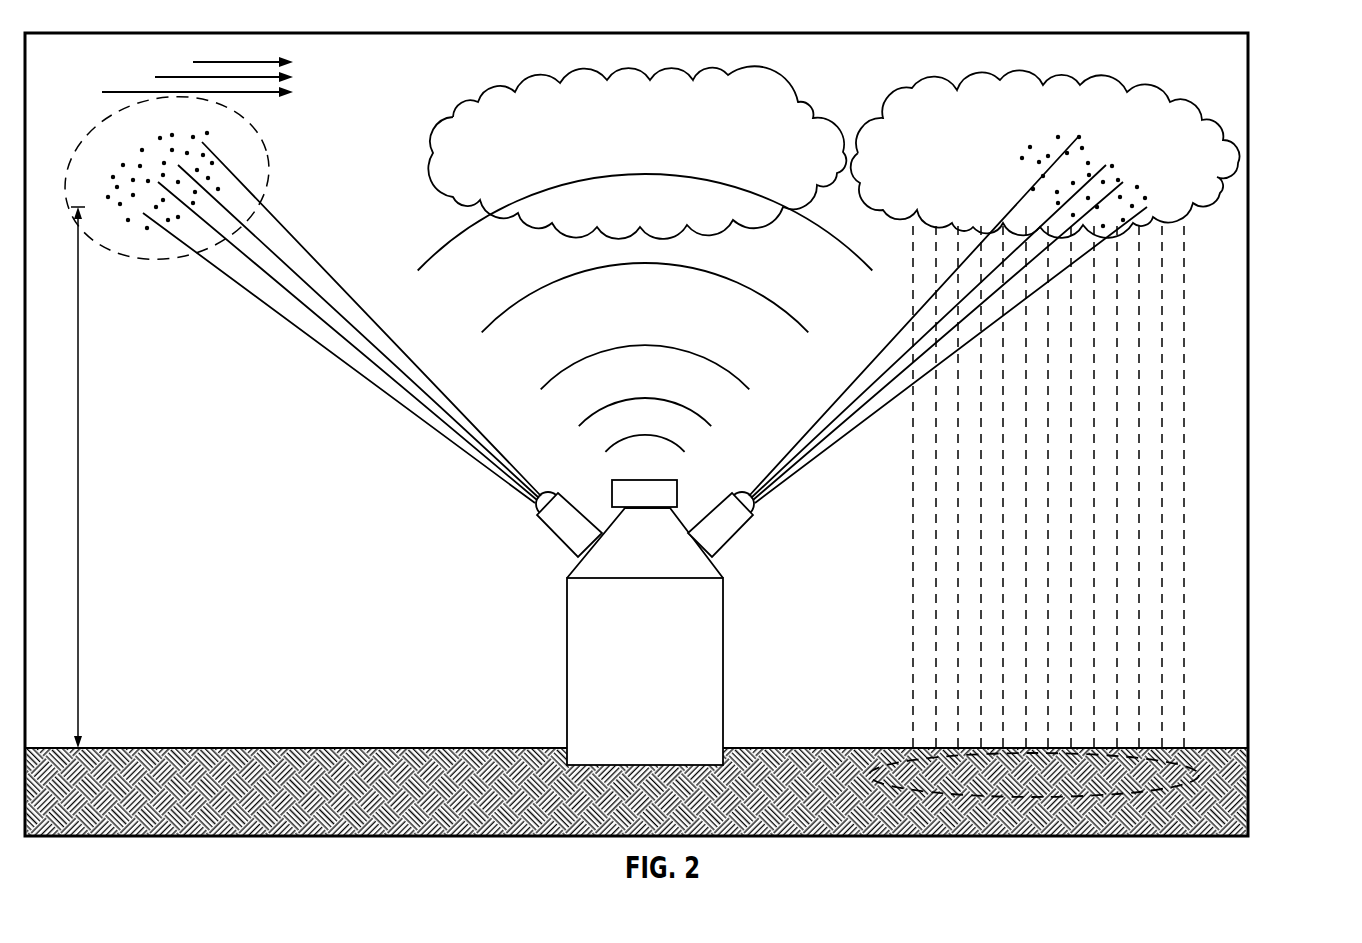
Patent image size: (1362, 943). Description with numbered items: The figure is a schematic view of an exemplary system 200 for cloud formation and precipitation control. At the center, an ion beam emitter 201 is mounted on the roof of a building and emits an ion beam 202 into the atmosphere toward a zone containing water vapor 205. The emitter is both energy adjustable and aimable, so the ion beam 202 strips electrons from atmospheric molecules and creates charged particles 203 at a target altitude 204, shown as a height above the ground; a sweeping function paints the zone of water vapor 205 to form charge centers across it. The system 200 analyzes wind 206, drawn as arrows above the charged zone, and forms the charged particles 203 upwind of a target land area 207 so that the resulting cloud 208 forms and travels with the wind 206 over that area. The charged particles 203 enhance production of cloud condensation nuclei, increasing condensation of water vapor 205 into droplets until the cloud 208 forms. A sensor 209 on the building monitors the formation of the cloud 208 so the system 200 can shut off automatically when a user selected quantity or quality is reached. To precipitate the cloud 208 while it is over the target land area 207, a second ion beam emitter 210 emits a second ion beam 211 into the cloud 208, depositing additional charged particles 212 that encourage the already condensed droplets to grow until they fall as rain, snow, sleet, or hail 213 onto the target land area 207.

The system 200 is at (1259, 65).
The ion beam emitter 201 is at (550, 533).
The ion beam 202 is at (318, 253).
The charged particles 203 is at (222, 145).
The target altitude 204 is at (77, 477).
The water vapor 205 is at (130, 248).
The wind 206 is at (196, 62).
The target land area 207 is at (908, 755).
The cloud 208 is at (480, 103).
The sensor 209 is at (665, 480).
The second ion beam emitter 210 is at (735, 533).
The second ion beam 211 is at (830, 448).
The additional charged particles 212 is at (1092, 134).
The rain, snow, sleet, or hail 213 is at (913, 575).